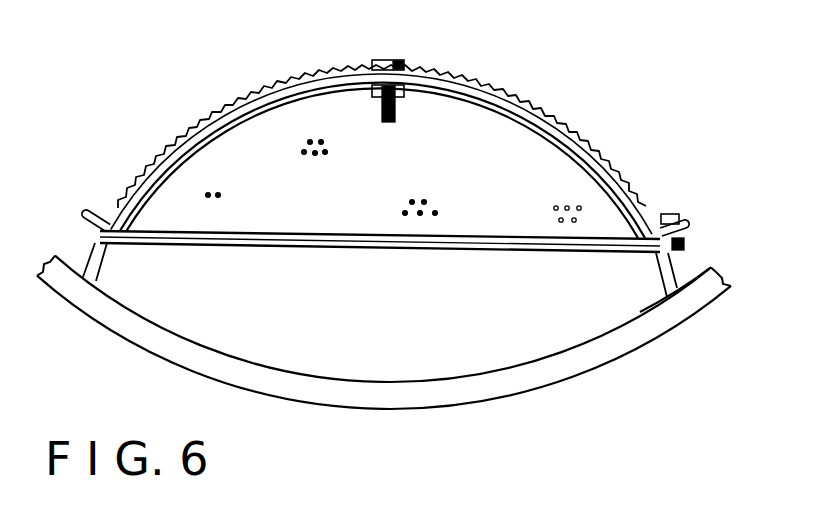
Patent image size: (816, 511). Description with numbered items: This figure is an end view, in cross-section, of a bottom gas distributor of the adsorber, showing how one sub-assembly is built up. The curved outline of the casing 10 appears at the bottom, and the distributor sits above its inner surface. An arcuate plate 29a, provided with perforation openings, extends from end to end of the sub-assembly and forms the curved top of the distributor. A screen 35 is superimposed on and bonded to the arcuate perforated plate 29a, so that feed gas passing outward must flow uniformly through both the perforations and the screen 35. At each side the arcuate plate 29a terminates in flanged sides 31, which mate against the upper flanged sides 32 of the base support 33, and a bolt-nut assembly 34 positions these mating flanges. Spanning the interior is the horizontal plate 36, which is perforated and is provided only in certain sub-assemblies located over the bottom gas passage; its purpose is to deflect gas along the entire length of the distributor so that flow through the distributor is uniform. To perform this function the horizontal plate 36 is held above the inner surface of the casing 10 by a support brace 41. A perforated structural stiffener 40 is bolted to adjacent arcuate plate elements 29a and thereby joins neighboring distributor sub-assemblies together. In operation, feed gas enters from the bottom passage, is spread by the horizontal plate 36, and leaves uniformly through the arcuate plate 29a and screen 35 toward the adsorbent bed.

The casing 10 is at (523, 395).
The arcuate plate 29a is at (419, 77).
The flanged sides 31 is at (680, 222).
The upper flanged sides 32 is at (684, 229).
The base support 33 is at (690, 266).
The bolt-nut assembly 34 is at (669, 214).
The screen 35 is at (509, 93).
The horizontal plate 36 is at (454, 248).
The perforated structural stiffener 40 is at (258, 150).
The support brace 41 is at (102, 260).